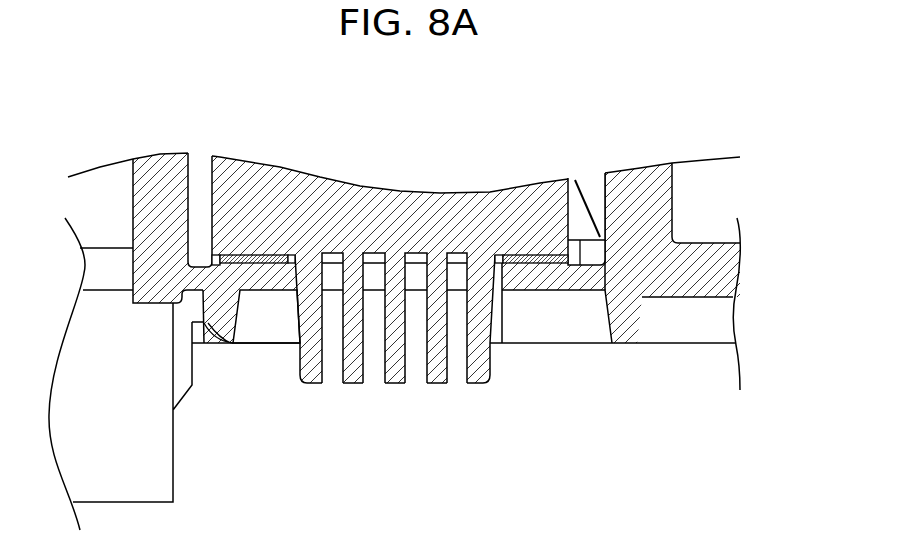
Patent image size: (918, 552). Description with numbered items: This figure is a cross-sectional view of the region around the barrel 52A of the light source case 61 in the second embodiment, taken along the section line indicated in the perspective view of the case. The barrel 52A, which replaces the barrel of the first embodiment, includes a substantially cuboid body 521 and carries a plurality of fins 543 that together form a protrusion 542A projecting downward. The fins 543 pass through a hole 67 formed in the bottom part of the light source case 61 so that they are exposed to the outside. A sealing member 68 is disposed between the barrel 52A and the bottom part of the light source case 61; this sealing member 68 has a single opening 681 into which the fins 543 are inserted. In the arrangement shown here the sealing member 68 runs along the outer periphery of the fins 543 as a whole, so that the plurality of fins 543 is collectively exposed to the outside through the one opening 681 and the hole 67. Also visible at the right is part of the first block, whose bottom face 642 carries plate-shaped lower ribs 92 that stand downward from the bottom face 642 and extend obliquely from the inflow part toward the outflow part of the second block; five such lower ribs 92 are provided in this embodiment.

The sealing member 68 is at (260, 253).
The opening 681 is at (290, 250).
The body 521 is at (527, 200).
The barrel 52A is at (573, 215).
The light source case 61 is at (260, 292).
The hole 67 is at (290, 292).
The fins 543 is at (492, 370).
The protrusion 542A is at (492, 370).
The bottom face 642 is at (550, 292).
The lower ribs 92 is at (698, 337).